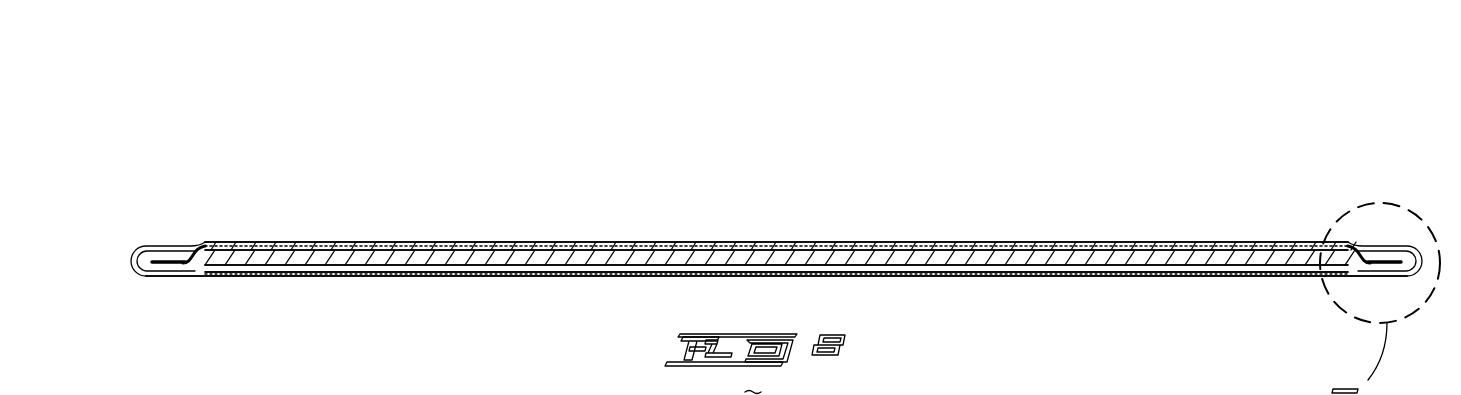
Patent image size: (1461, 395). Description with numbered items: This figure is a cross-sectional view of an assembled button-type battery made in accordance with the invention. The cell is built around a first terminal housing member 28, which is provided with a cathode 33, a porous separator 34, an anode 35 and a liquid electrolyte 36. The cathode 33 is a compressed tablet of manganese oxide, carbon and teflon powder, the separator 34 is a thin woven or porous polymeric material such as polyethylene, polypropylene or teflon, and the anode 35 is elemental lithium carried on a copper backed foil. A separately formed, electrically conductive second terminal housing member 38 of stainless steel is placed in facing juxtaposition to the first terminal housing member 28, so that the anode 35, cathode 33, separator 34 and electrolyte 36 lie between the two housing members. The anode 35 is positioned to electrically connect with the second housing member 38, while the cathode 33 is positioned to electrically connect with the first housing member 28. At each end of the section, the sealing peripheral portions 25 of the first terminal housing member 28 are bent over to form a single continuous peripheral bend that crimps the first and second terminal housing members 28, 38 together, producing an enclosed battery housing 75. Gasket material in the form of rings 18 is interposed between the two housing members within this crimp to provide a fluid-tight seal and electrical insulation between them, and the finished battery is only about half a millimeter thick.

The gasket rings 18 is at (157, 246).
The sealing peripheral portions 25 is at (167, 246).
The first terminal housing member 28 is at (1182, 277).
The cathode 33 is at (1100, 272).
The porous separator 34 is at (1195, 242).
The anode 35 is at (1000, 242).
The liquid electrolyte 36 is at (183, 246).
The second terminal housing member 38 is at (1127, 242).
The enclosed battery housing 75 is at (1232, 190).